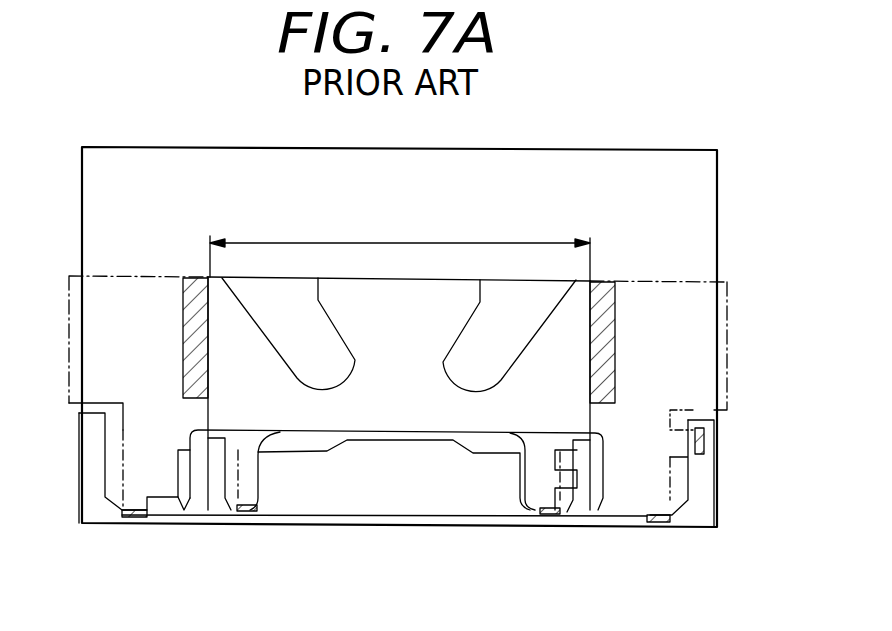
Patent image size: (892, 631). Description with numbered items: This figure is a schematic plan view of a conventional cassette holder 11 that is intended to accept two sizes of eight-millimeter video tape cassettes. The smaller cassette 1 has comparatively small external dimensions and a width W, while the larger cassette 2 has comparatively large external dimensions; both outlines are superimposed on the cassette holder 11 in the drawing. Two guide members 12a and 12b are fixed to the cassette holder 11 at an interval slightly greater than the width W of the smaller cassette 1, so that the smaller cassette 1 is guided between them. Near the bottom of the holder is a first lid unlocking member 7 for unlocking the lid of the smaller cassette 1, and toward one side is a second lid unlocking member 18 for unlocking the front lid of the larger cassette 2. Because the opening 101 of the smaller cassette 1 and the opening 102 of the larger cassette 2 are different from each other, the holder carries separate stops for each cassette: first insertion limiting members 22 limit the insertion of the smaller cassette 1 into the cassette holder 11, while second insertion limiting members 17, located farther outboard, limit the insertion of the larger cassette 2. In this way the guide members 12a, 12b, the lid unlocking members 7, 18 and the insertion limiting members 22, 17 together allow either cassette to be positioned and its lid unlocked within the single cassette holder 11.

The smaller cassette 1 is at (362, 280).
The larger cassette 2 is at (191, 147).
The first lid unlocking member 7 is at (584, 476).
The cassette holder 11 is at (673, 272).
The guide member 12a is at (183, 325).
The guide member 12b is at (618, 318).
The second insertion limiting member 17 is at (133, 515).
The second lid unlocking member 18 is at (700, 443).
The first insertion limiting member 22 is at (247, 511).
The opening of the smaller cassette 101 is at (472, 470).
The opening of the larger cassette 102 is at (312, 432).